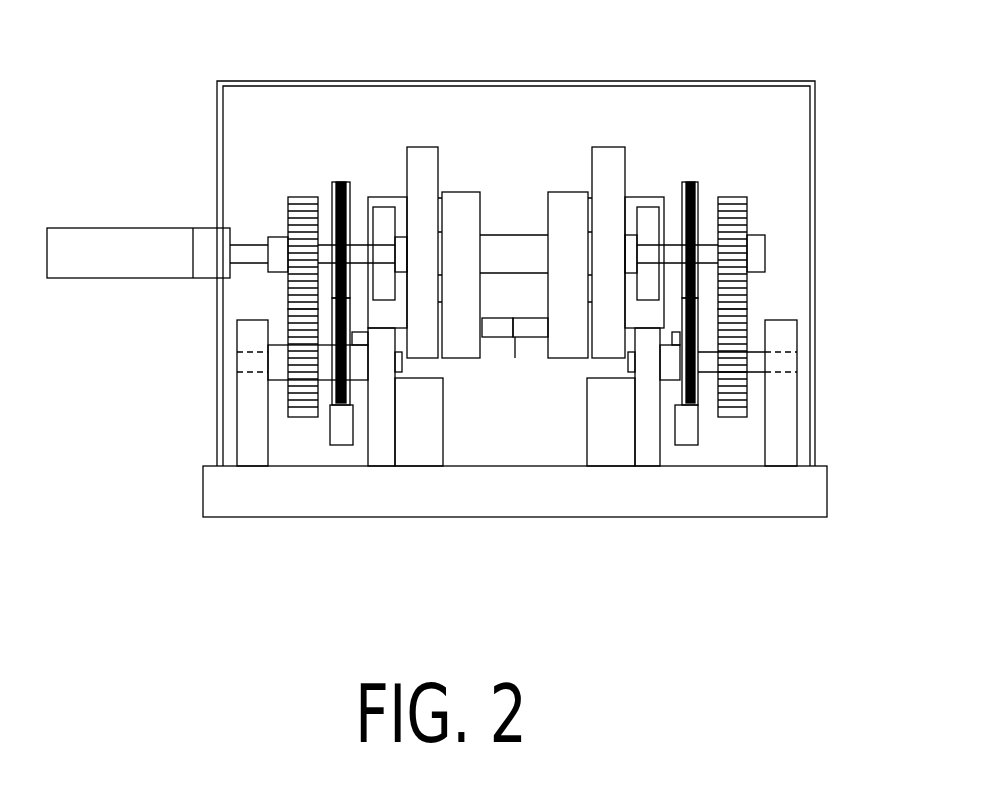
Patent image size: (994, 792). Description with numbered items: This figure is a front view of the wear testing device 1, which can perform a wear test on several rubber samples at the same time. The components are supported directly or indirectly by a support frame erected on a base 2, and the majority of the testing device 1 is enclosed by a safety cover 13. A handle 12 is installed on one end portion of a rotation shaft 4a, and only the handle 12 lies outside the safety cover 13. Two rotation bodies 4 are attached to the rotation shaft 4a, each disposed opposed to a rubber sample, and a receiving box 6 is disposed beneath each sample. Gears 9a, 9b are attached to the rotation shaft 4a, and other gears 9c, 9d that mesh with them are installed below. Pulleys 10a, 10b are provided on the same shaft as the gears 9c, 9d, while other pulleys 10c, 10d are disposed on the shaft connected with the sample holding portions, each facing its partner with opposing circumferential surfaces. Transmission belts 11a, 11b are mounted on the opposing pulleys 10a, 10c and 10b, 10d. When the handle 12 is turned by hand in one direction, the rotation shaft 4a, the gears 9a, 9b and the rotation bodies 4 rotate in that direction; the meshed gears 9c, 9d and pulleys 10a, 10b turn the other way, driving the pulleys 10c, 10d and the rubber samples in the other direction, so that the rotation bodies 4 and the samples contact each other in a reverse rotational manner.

The wear testing device 1 is at (684, 72).
The base 2 is at (517, 500).
The rotation body 4 is at (422, 163).
The rotation shaft 4a is at (250, 250).
The receiving box 6 is at (413, 457).
The gear 9a is at (303, 207).
The gear 9b is at (733, 203).
The gear 9c is at (300, 407).
The gear 9d is at (733, 407).
The pulley 10a is at (350, 403).
The pulley 10b is at (680, 402).
The pulley 10c is at (352, 188).
The pulley 10d is at (677, 193).
The transmission belt 11a is at (340, 410).
The transmission belt 11b is at (688, 408).
The handle 12 is at (113, 264).
The safety cover 13 is at (217, 134).